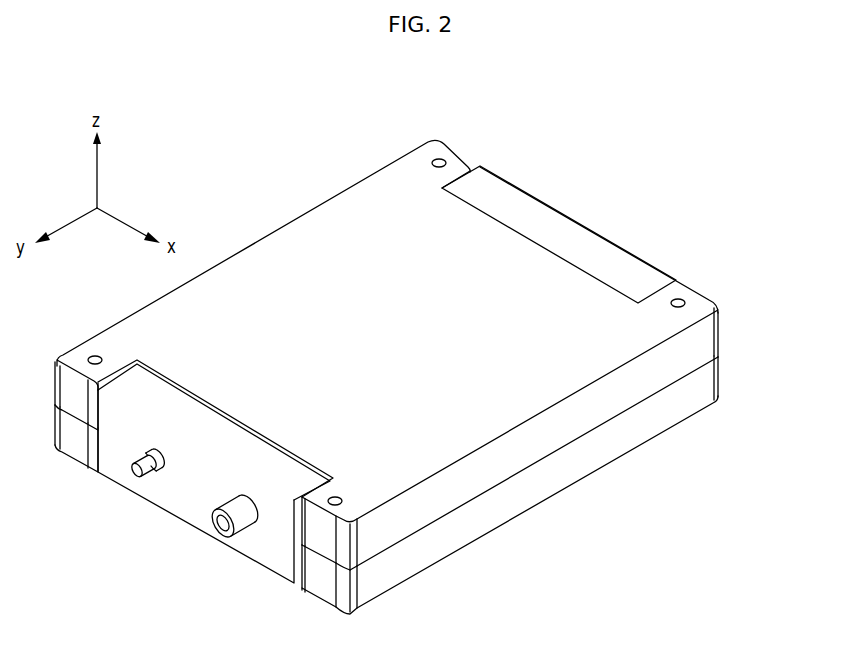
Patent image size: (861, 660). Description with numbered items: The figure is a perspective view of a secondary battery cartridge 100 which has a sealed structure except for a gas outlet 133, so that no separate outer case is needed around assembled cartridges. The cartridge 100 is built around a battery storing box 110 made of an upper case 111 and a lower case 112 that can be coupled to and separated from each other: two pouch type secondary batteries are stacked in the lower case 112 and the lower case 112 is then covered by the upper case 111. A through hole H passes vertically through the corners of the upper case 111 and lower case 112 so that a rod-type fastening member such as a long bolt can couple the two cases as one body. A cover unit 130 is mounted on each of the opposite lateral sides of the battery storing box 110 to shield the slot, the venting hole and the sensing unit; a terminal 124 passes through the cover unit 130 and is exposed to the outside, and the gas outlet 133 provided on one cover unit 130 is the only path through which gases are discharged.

The secondary battery cartridge 100 is at (176, 96).
The battery storing box 110 is at (770, 315).
The upper case 111 is at (698, 338).
The lower case 112 is at (698, 387).
The cover unit 130 is at (572, 233).
The terminal 124 is at (132, 470).
The gas outlet 133 is at (237, 524).
The through hole H is at (441, 159).